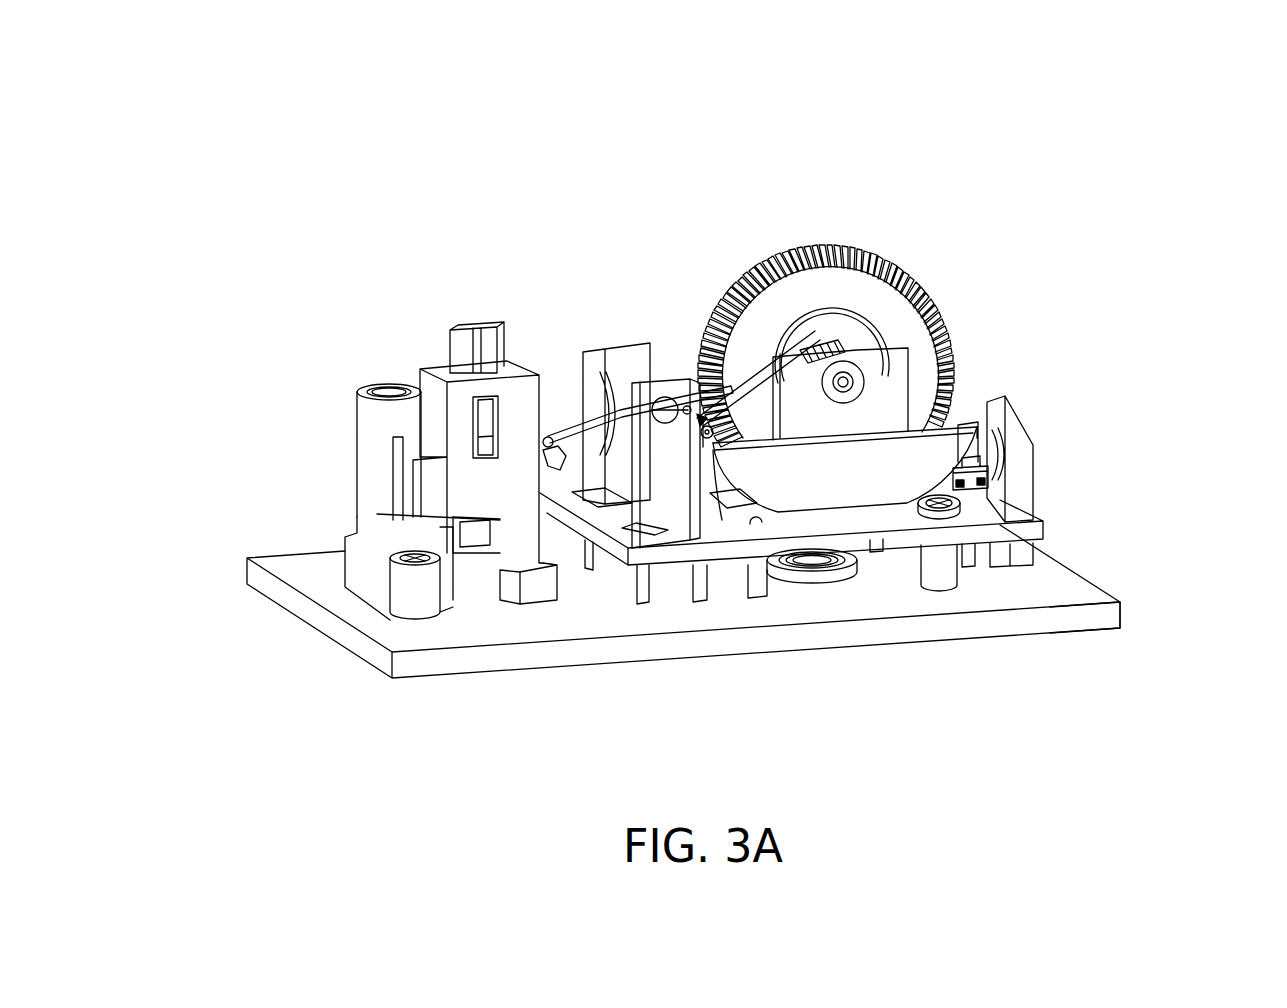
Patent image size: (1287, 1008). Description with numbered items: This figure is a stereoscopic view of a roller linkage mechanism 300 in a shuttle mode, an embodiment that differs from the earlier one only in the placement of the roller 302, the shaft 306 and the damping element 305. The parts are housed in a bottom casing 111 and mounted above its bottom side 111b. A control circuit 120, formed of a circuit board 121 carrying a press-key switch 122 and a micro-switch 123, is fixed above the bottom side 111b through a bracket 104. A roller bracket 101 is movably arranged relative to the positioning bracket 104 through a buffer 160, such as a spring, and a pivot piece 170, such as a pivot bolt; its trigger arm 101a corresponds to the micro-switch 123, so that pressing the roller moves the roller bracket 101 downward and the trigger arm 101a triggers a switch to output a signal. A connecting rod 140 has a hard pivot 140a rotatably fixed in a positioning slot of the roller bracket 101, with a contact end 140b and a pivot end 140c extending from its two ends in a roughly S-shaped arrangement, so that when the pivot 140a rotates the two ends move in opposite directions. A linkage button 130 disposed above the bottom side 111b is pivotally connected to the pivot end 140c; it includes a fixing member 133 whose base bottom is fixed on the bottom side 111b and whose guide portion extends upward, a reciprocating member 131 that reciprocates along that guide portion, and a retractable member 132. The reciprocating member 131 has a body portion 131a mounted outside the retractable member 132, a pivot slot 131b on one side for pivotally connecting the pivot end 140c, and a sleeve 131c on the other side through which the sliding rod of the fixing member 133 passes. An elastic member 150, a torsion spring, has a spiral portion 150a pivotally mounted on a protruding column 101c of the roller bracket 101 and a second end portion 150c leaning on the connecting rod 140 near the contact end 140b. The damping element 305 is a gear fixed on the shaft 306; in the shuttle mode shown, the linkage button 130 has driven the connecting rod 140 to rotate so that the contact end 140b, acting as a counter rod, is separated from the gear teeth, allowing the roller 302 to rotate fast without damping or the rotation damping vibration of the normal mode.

The roller linkage mechanism 300 is at (133, 82).
The roller bracket 101 is at (1197, 320).
The trigger arm 101a is at (958, 440).
The protruding column 101c is at (678, 386).
The positioning bracket 104 is at (600, 350).
The bottom casing 111 is at (1100, 613).
The bottom side 111b is at (1092, 586).
The control circuit 120 is at (1000, 702).
The circuit board 121 is at (903, 545).
The press-key switch 122 is at (875, 545).
The micro-switch 123 is at (972, 492).
The linkage button 130 is at (163, 418).
The reciprocating member 131 is at (420, 353).
The body portion 131a is at (385, 485).
The pivot slot 131b is at (553, 480).
The sleeve 131c is at (445, 545).
The retractable member 132 is at (487, 445).
The fixing member 133 is at (363, 577).
The connecting rod 140 is at (1197, 214).
The pivot 140a is at (675, 392).
The contact end 140b is at (799, 336).
The pivot end 140c is at (548, 440).
The elastic member 150 is at (830, 750).
The spiral portion 150a is at (713, 447).
The second end portion 150c is at (865, 506).
The buffer 160 is at (815, 575).
The pivot piece 170 is at (666, 553).
The roller 302 is at (847, 283).
The damping element 305 is at (846, 370).
The shaft 306 is at (866, 384).